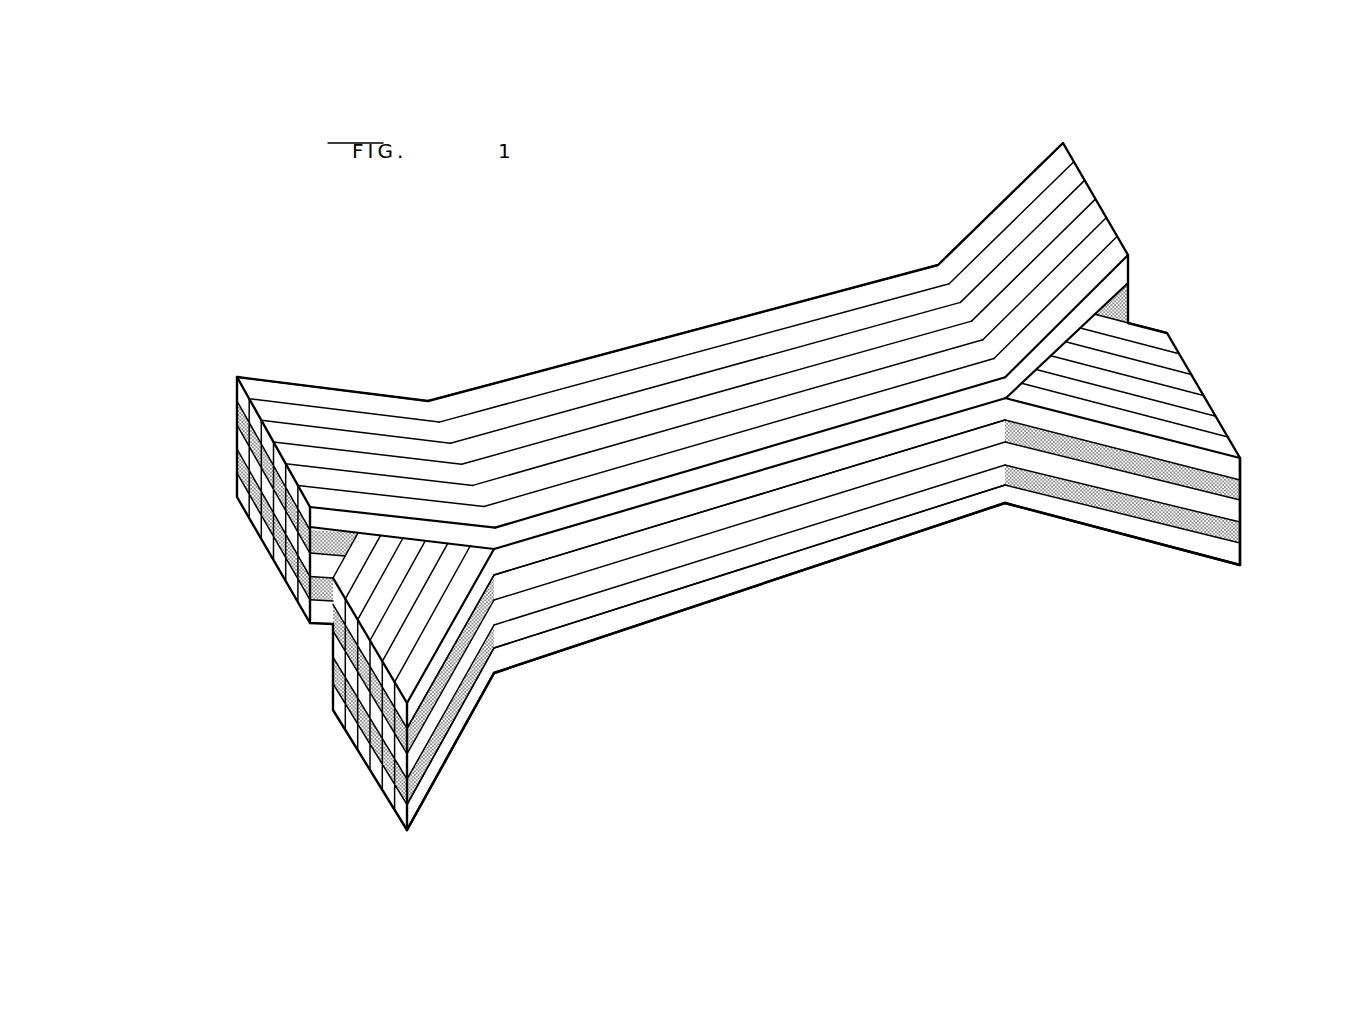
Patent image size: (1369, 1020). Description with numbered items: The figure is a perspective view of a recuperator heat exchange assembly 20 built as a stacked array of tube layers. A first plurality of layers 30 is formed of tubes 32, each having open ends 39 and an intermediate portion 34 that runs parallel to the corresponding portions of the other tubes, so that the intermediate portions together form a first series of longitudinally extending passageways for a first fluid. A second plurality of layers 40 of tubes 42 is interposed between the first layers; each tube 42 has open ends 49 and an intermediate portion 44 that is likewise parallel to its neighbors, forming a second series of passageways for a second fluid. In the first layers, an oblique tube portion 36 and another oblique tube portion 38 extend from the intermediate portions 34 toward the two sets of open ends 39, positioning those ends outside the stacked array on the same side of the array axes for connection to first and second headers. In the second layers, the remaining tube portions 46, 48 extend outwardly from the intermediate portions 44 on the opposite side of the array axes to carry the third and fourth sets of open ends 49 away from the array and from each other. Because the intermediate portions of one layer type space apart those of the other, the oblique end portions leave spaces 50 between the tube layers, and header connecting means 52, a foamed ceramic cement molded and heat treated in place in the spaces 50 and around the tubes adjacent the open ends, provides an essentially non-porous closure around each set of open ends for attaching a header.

The recuperator heat exchange assembly 20 is at (913, 622).
The first plurality of layers of tubes 30 is at (910, 418).
The tube 32 is at (585, 357).
The intermediate portion 34 is at (820, 300).
The oblique tube portion 36 is at (320, 394).
The oblique tube portion 38 is at (1040, 178).
The open ends 39 is at (237, 487).
The second plurality of layers of tubes 40 is at (845, 462).
The tube 42 is at (598, 646).
The intermediate portion 44 is at (725, 587).
The tube portion 46 is at (450, 742).
The tube portion 48 is at (1060, 510).
The open ends 49 is at (400, 780).
The spaces 50 is at (1124, 287).
The header connecting means 52 is at (1133, 298).